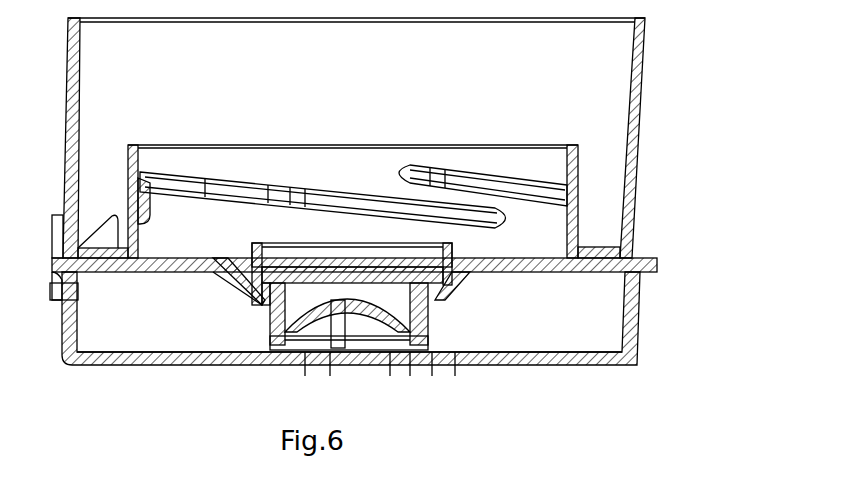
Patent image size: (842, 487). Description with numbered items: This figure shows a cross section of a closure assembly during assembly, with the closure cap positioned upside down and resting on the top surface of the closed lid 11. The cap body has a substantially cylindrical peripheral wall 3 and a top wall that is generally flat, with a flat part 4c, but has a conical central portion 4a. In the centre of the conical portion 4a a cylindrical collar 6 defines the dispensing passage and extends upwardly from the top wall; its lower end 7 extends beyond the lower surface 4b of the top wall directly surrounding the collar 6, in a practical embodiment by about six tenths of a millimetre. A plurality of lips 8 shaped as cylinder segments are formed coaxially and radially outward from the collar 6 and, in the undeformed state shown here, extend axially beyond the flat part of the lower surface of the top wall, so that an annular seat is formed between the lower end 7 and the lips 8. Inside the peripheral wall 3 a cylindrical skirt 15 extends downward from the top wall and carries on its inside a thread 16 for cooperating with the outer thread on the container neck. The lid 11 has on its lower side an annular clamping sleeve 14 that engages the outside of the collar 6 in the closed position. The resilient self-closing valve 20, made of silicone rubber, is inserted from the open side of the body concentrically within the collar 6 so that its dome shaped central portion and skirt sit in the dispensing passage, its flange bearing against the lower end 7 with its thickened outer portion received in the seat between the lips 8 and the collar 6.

The peripheral wall 3 is at (644, 97).
The conical central portion 4a is at (465, 281).
The lower surface 4b is at (445, 300).
The flat part 4c is at (167, 257).
The cylindrical collar 6 is at (283, 306).
The lower end 7 is at (270, 306).
The lips 8 is at (247, 258).
The lid 11 is at (637, 330).
The annular clamping sleeve 14 is at (438, 345).
The cylindrical skirt 15 is at (126, 186).
The thread 16 is at (255, 186).
The resilient self-closing valve 20 is at (388, 376).